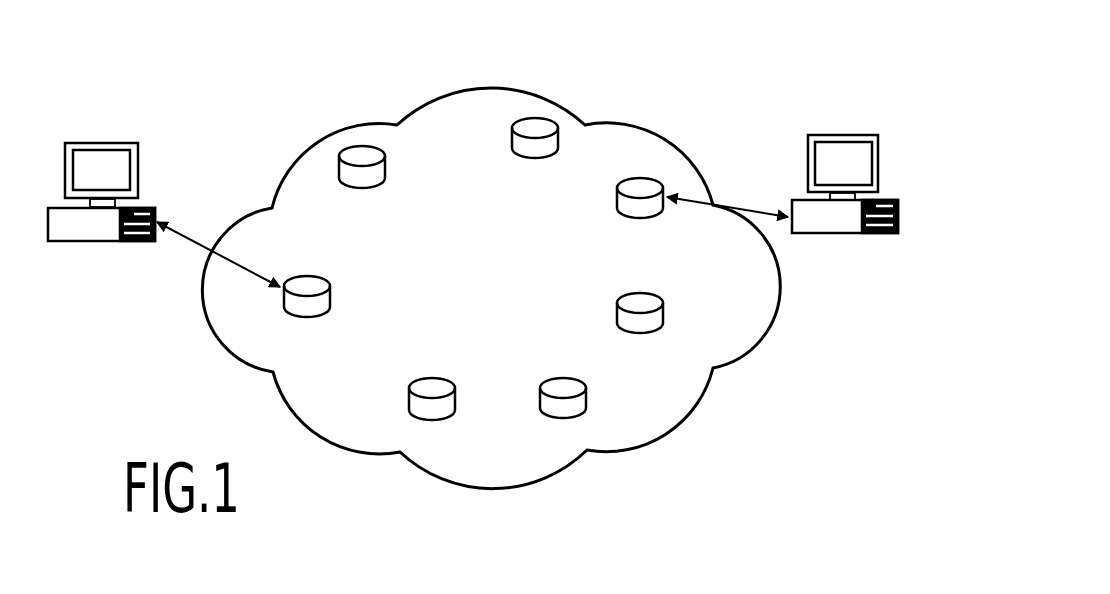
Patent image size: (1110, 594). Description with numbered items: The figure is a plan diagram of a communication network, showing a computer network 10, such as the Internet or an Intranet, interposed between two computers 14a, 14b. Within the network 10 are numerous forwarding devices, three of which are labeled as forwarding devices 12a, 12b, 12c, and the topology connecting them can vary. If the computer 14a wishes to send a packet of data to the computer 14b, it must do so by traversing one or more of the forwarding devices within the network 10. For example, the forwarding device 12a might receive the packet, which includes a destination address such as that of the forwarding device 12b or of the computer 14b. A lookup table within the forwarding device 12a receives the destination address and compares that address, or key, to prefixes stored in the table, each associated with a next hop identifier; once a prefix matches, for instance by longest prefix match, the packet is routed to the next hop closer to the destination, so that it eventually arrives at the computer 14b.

The computer network 10 is at (677, 35).
The forwarding device 12a is at (332, 296).
The forwarding device 12b is at (616, 195).
The forwarding device 12c is at (616, 311).
The computer 14a is at (101, 142).
The computer 14b is at (865, 236).